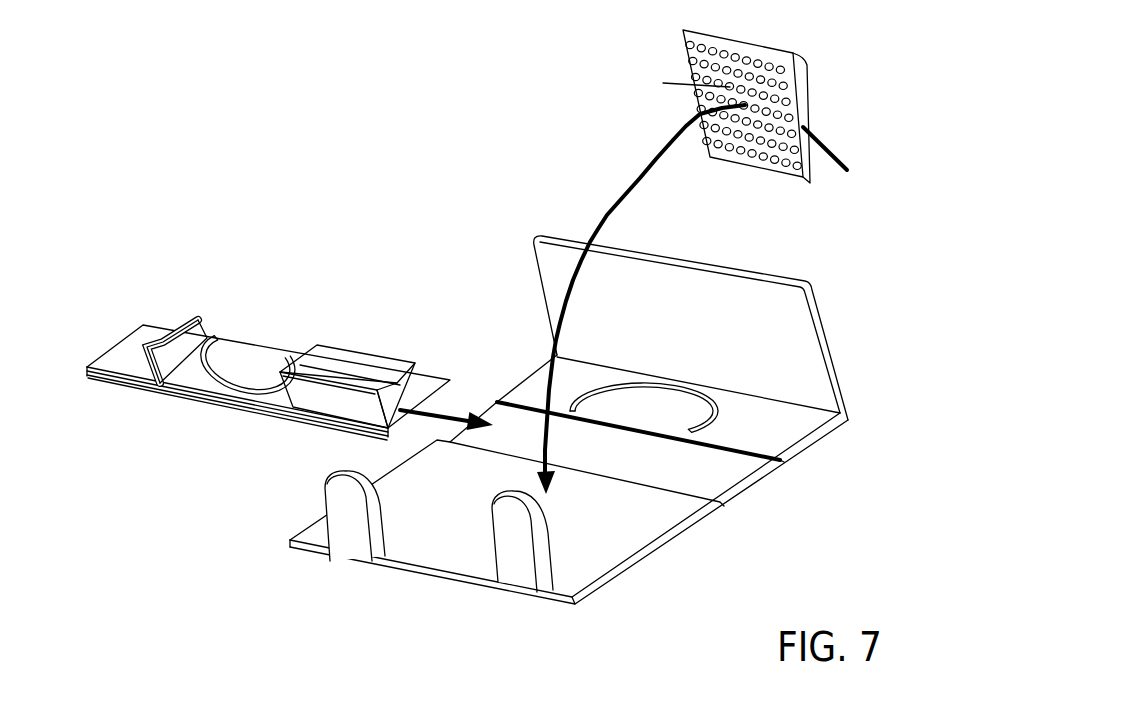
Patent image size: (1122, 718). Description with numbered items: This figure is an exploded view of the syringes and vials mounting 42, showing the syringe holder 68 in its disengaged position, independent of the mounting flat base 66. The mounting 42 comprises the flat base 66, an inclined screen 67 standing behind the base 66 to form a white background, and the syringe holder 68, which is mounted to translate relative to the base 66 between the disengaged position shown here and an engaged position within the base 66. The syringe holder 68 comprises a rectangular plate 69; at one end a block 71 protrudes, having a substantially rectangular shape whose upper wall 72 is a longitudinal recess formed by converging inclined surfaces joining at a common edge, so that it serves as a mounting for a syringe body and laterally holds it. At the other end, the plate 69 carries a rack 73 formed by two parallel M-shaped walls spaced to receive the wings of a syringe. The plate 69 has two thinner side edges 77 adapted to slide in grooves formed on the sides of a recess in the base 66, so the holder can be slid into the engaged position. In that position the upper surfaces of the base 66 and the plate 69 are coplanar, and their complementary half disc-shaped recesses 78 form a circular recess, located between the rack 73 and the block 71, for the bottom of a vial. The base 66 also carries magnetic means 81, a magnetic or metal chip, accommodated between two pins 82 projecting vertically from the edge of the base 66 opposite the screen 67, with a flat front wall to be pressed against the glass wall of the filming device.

The syringes and vials mounting 42 is at (586, 362).
The mounting flat base 66 is at (814, 436).
The inclined screen 67 is at (802, 335).
The syringe holder 68 is at (251, 371).
The rectangular plate 69 is at (117, 383).
The block 71 is at (358, 340).
The top surface of module 72 is at (333, 357).
The rack 73 is at (155, 402).
The thinner side edges 77 is at (252, 420).
The complementary recesses 78 is at (225, 336).
The magnetic means 81 is at (520, 547).
The pins 82 is at (348, 552).